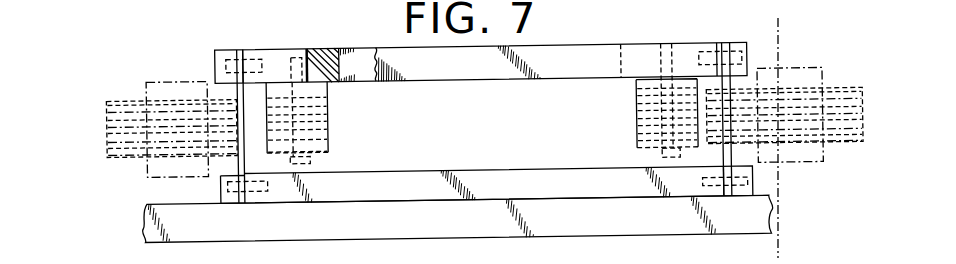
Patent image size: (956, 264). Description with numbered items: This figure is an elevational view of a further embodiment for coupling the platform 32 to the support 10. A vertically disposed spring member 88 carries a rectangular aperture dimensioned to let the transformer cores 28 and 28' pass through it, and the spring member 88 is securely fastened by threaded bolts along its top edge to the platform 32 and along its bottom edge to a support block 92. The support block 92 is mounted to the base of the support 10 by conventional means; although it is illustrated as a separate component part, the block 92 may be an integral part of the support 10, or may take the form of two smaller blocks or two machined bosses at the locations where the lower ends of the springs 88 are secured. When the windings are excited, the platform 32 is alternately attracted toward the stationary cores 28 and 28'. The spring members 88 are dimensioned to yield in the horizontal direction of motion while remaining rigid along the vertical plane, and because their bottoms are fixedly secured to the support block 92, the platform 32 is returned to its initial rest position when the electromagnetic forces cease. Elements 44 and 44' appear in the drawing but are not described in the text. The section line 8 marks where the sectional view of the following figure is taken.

The support 10 is at (471, 228).
The transformer core 28 is at (162, 139).
The transformer core 28' is at (785, 131).
The platform 32 is at (470, 68).
The flange bearing 44 is at (331, 122).
The flange bearing 44' is at (628, 101).
The spring member 88 is at (240, 95).
The support block 92 is at (388, 179).
The section line 8— 8 is at (782, 244).